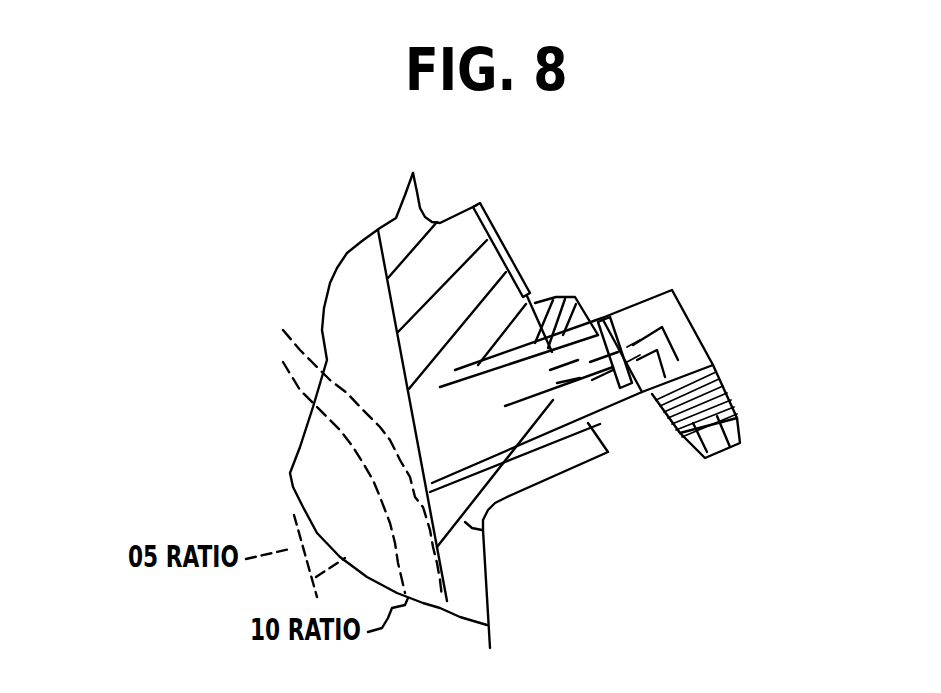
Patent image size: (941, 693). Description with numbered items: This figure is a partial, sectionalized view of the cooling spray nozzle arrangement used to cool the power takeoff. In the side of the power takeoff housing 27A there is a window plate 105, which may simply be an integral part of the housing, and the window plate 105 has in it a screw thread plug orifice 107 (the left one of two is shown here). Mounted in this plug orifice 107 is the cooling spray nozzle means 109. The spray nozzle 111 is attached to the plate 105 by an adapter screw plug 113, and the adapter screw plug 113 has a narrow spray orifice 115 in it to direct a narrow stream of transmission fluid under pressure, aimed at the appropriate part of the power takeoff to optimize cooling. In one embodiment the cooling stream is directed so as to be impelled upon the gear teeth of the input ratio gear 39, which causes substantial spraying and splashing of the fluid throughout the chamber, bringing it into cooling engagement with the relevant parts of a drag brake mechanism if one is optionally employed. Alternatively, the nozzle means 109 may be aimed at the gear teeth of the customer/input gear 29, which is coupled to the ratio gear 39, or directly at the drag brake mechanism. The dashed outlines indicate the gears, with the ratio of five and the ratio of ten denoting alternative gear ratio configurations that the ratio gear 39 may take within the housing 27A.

The window plate 105 is at (466, 396).
The plug orifice 107 is at (490, 417).
The cooling spray nozzle means 109 is at (631, 250).
The spray nozzle 111 is at (671, 349).
The adapter screw plug 113 is at (576, 305).
The spray orifice 115 is at (530, 390).
The housing 27A is at (545, 535).
The customer/input gear 29 is at (490, 579).
The input ratio gear 39 is at (362, 463).